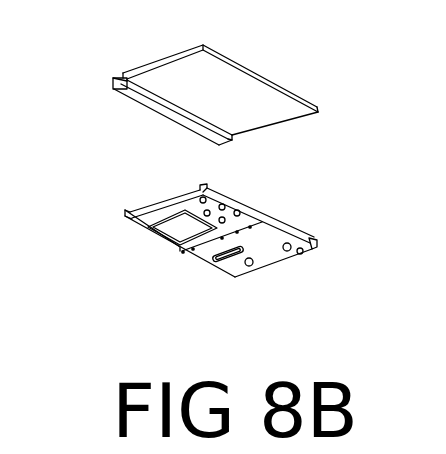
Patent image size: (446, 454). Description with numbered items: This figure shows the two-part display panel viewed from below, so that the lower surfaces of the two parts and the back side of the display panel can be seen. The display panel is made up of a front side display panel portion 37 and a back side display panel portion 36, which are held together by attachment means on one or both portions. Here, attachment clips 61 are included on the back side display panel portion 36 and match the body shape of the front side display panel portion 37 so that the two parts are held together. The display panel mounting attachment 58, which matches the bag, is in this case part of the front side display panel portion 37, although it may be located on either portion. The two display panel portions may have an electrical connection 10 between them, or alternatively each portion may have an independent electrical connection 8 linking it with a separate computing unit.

The independent electrical connection 8 is at (138, 160).
The electrical connection 10 is at (180, 108).
The back side display panel portion 36 is at (202, 267).
The front side display panel portion 37 is at (277, 78).
The display panel mounting attachment 58 is at (115, 83).
The attachment clips 61 is at (207, 184).